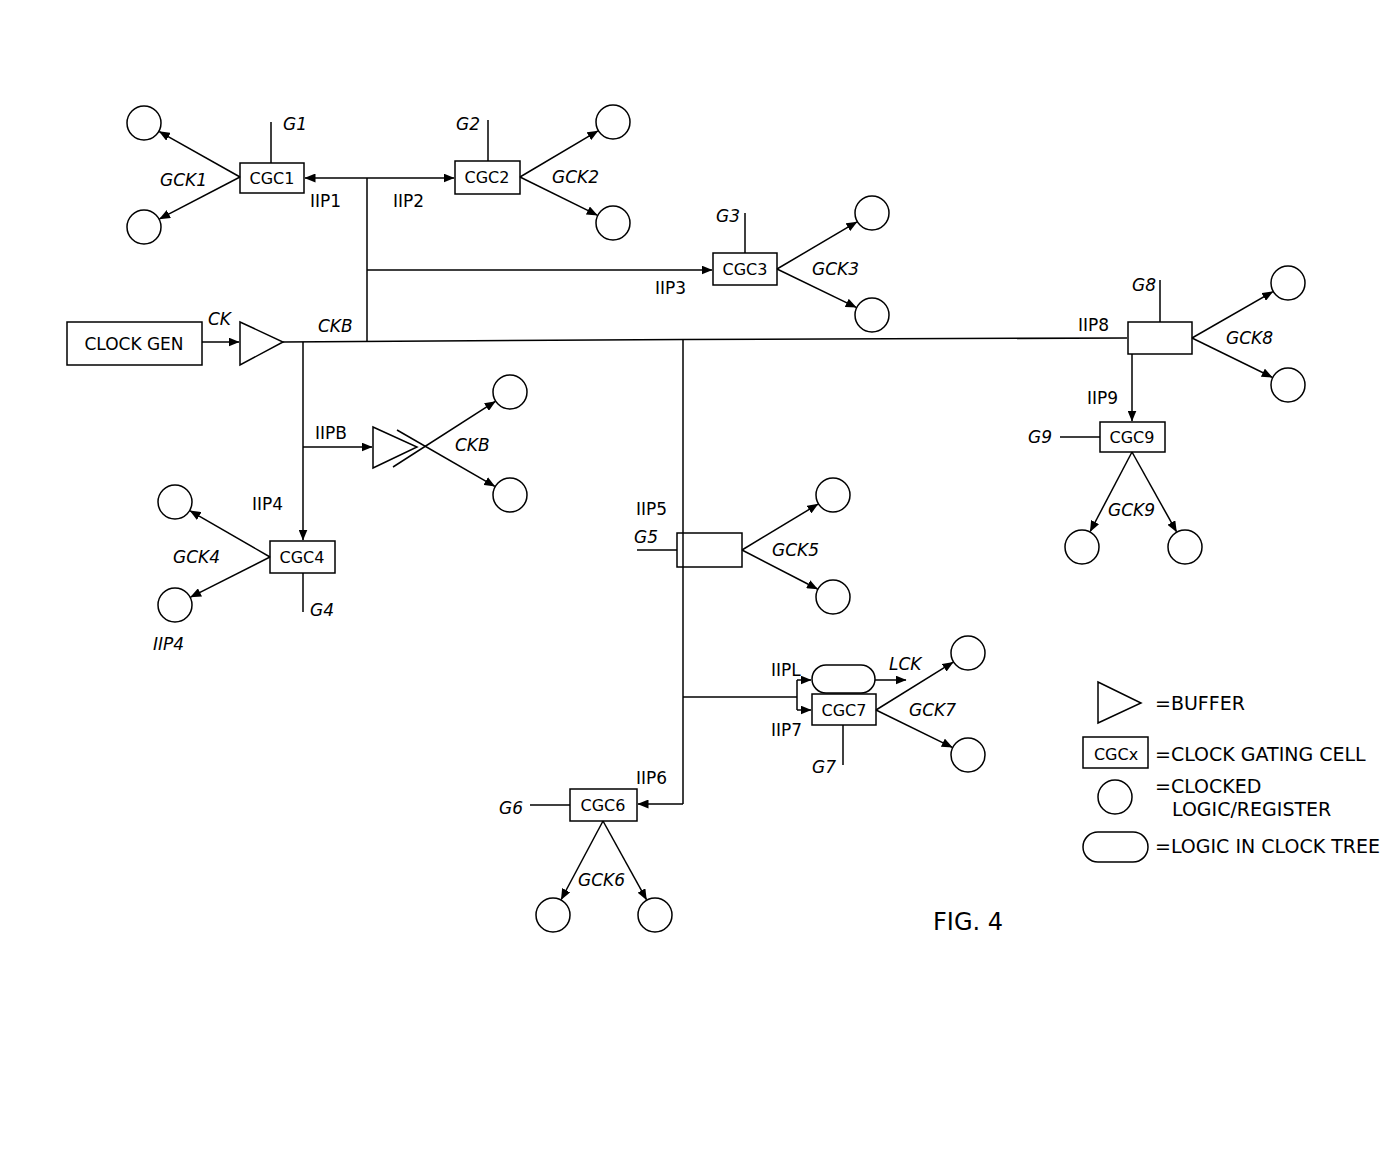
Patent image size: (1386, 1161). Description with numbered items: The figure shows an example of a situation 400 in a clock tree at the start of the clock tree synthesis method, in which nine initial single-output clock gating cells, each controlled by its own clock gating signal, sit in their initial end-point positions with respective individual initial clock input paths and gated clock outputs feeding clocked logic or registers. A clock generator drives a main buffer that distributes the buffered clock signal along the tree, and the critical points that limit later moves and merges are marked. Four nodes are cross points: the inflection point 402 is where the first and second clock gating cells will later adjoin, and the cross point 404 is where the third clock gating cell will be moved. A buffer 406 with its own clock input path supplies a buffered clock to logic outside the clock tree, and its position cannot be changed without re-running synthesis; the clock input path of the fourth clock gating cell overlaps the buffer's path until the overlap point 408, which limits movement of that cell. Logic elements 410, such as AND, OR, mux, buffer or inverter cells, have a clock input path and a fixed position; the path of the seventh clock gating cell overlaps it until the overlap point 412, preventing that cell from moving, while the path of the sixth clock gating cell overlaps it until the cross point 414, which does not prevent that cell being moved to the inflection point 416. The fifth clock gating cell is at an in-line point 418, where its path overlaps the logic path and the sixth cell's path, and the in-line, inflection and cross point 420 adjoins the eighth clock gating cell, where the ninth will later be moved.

The situation 400 is at (992, 170).
The inflection point 402 is at (368, 172).
The cross point 404 is at (366, 271).
The buffer 406 is at (392, 431).
The overlap point 408 is at (302, 447).
The logic elements 410 is at (843, 664).
The overlap point 412 is at (796, 688).
The cross point 414 is at (682, 697).
The inflection point 416 is at (686, 804).
The in-line point 418 is at (676, 557).
The cross point 420 is at (1127, 345).